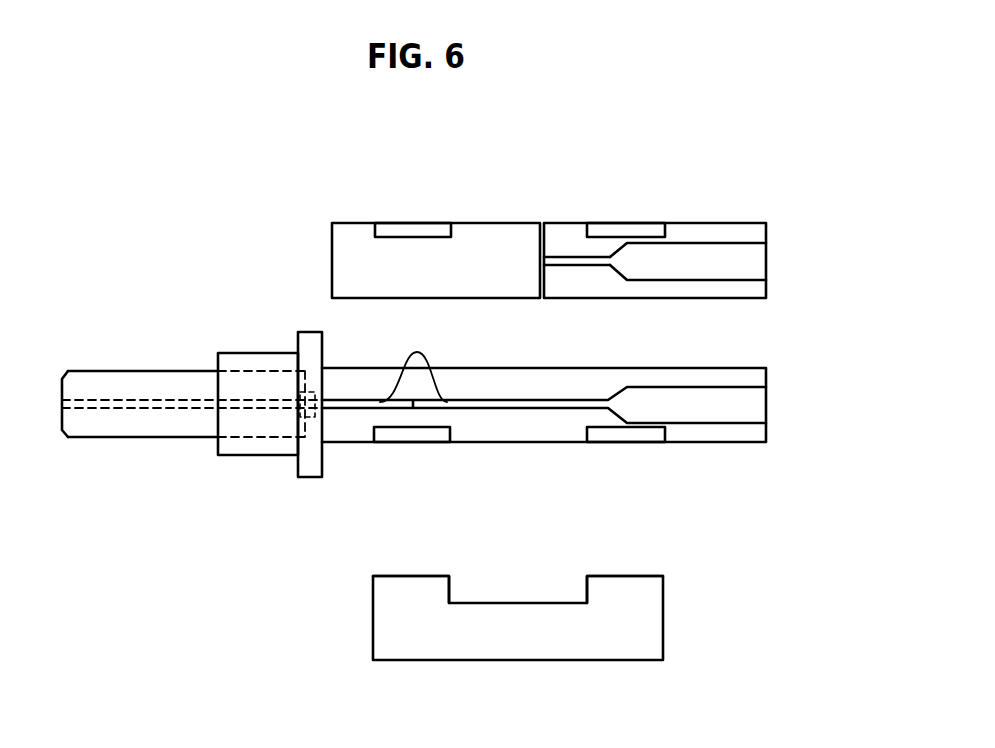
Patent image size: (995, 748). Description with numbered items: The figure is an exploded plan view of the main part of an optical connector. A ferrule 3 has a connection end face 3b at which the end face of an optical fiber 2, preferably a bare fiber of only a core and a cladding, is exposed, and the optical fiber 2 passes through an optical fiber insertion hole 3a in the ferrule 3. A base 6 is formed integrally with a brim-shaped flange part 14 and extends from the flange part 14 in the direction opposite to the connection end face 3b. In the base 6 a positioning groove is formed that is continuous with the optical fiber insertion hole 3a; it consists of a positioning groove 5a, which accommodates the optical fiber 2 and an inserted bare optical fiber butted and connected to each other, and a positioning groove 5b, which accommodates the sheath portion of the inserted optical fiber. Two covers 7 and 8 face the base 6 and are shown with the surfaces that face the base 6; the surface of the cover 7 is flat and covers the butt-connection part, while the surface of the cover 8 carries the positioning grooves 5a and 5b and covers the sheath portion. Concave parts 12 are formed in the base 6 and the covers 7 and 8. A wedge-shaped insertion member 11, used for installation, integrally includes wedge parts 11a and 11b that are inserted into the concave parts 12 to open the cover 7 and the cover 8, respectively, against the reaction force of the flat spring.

The optical fiber 2 is at (187, 400).
The ferrule 3 is at (127, 387).
The optical fiber insertion hole 3a is at (168, 407).
The connection end face 3b is at (60, 390).
The positioning groove 5a is at (555, 262).
The positioning groove 5b is at (712, 260).
The base 6 is at (515, 422).
The cover 7 is at (490, 240).
The cover 8 is at (575, 240).
The insertion member 11 is at (513, 642).
The wedge part 11a is at (413, 588).
The wedge part 11b is at (632, 587).
The concave part 12 is at (413, 435).
The flange part 14 is at (310, 472).